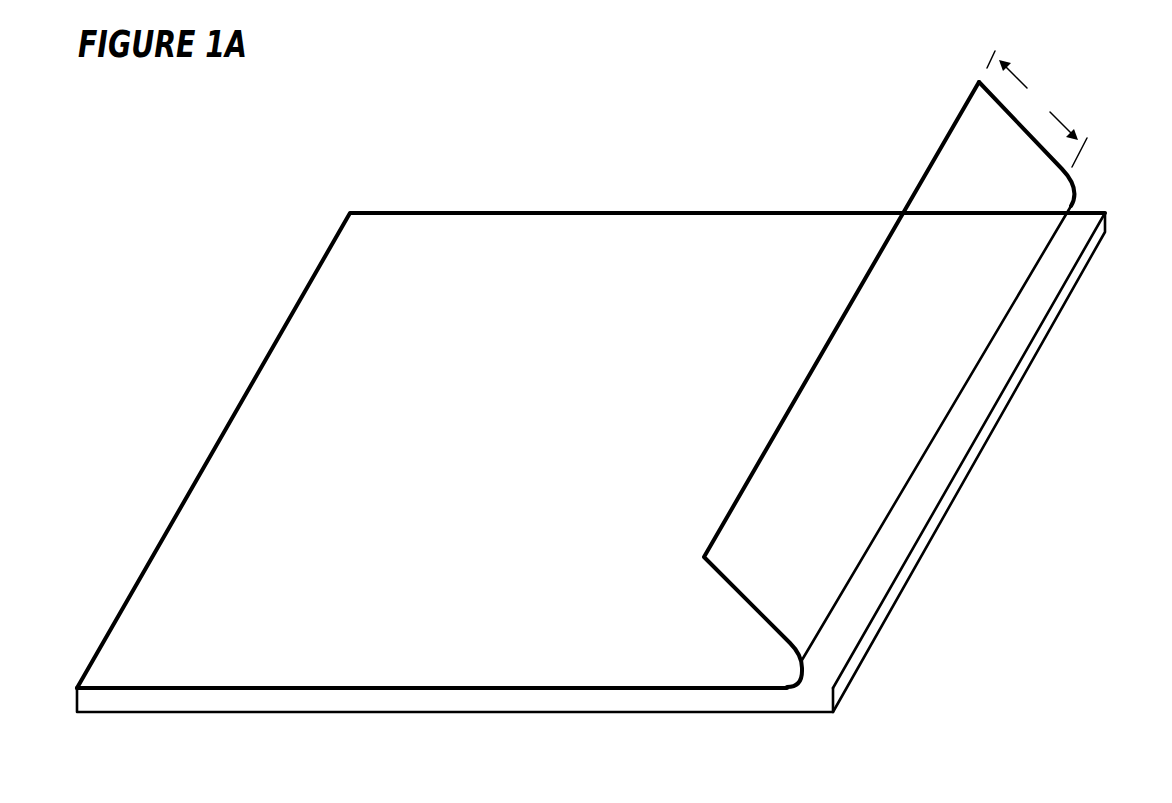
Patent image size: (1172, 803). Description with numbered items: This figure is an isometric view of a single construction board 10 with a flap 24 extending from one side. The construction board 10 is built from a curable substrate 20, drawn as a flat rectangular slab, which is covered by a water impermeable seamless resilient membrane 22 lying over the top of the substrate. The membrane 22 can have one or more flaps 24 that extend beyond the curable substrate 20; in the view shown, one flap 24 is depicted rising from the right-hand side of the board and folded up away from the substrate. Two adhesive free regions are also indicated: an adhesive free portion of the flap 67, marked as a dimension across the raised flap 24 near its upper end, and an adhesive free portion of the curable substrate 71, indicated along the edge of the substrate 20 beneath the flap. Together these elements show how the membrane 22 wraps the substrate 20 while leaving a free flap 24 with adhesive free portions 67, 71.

The construction board 10 is at (295, 133).
The curable substrate 20 is at (453, 703).
The water impermeable seamless resilient membrane 22 is at (267, 418).
The flap 24 is at (957, 153).
The adhesive free portion of the flap 67 is at (1037, 109).
The adhesive free portion of the curable substrate 71 is at (960, 447).